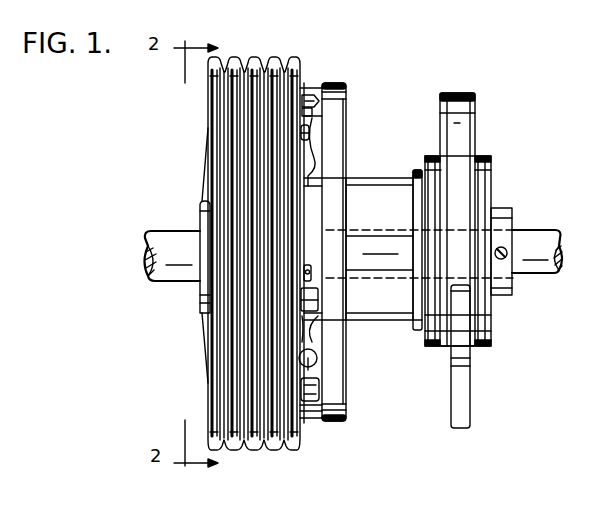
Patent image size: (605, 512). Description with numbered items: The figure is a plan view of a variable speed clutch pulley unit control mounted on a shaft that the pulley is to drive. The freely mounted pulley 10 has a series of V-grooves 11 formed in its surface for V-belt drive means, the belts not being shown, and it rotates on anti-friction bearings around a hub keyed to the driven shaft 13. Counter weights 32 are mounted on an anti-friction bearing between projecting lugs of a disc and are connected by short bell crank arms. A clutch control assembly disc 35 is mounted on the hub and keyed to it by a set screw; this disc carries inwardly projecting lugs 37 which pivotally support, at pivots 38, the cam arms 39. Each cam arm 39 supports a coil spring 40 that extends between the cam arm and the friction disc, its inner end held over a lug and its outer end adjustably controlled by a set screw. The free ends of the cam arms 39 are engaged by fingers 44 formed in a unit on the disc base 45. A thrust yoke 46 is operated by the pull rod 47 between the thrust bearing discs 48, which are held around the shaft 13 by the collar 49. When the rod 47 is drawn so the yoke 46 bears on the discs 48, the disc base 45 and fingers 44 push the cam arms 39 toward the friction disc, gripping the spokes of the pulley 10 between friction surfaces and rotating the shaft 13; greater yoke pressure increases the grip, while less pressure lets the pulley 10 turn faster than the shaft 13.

The pulley 10 is at (200, 91).
The V-grooves 11 is at (265, 52).
The driven shaft 13 is at (182, 264).
The counter weights 32 is at (312, 295).
The clutch control assembly disc 35 is at (338, 100).
The inwardly projecting lugs 37 is at (303, 95).
The pivot 38 is at (298, 90).
The cam arms 39 is at (306, 152).
The coil springs 40 is at (302, 126).
The fingers 44 is at (383, 224).
The disc base 45 is at (407, 162).
The thrust yoke 46 is at (465, 98).
The pull rod 47 is at (445, 406).
The thrust bearing discs 48 is at (430, 345).
The collar 49 is at (494, 200).